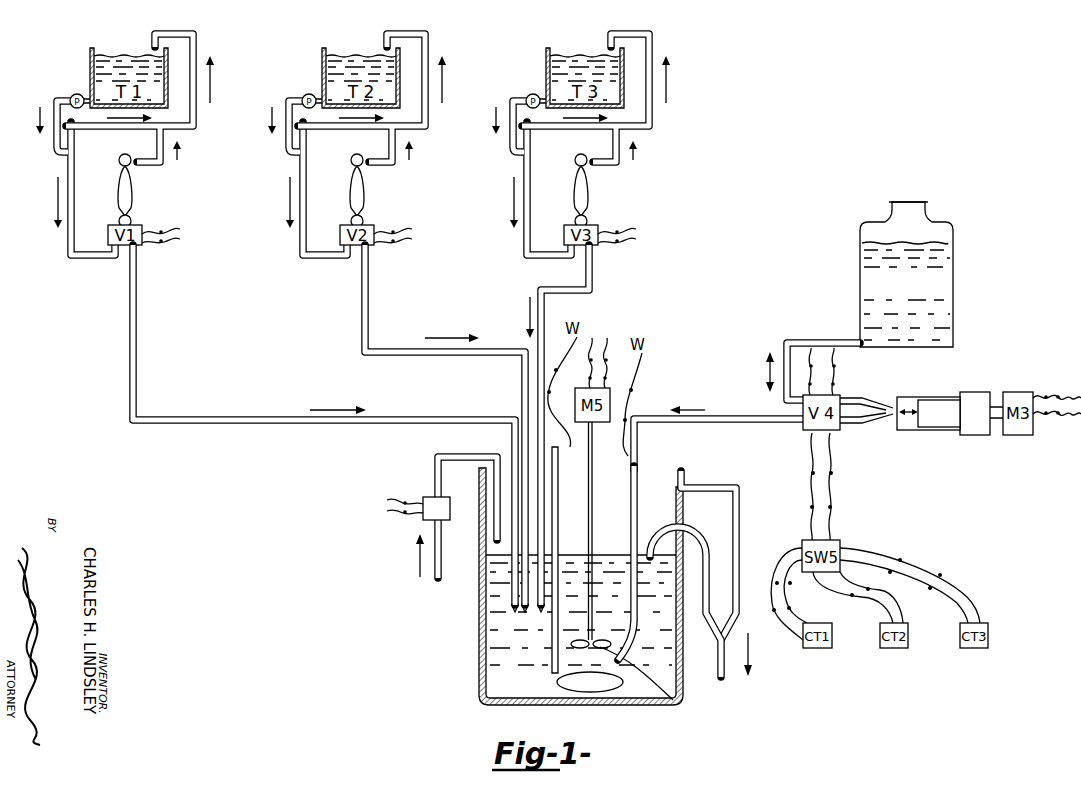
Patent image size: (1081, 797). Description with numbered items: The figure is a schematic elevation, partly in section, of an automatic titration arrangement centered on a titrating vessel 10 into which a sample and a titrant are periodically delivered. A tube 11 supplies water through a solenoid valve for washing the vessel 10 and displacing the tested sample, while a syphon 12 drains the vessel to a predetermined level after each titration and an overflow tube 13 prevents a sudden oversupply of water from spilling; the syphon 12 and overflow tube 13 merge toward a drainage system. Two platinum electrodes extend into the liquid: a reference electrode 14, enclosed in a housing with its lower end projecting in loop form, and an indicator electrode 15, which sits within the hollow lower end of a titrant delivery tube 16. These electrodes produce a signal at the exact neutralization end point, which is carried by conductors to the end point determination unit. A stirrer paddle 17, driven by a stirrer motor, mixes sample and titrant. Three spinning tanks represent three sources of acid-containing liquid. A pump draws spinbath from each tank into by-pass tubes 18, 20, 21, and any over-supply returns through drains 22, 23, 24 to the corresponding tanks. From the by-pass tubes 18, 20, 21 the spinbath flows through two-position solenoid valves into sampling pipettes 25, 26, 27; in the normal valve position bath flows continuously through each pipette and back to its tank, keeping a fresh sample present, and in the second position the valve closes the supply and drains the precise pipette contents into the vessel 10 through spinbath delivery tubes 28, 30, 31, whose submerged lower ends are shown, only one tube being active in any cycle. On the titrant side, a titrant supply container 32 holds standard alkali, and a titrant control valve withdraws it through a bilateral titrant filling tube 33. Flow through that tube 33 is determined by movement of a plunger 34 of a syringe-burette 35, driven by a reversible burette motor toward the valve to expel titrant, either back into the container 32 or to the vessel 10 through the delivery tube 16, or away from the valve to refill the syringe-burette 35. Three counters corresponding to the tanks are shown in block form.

The titrating vessel 10 is at (480, 605).
The tube 11 is at (433, 582).
The syphon 12 is at (690, 536).
The overflow tube 13 is at (740, 516).
The reference electrode 14 is at (553, 640).
The indicator electrode 15 is at (641, 470).
The titrant delivery tube 16 is at (752, 416).
The stirrer paddle 17 is at (673, 700).
The by-pass tube 18 is at (60, 153).
The by-pass tube 20 is at (299, 178).
The by-pass tube 21 is at (521, 178).
The drain 22 is at (198, 48).
The drain 23 is at (381, 95).
The drain 24 is at (605, 95).
The sampling pipette 25 is at (137, 189).
The sampling pipette 26 is at (378, 190).
The sampling pipette 27 is at (602, 190).
The spinbath delivery tube 28 is at (171, 422).
The spinbath delivery tube 30 is at (373, 353).
The spinbath delivery tube 31 is at (593, 270).
The titrant supply container 32 is at (953, 302).
The titrant filling tube 33 is at (833, 343).
The plunger 34 is at (950, 406).
The syringe-burette 35 is at (907, 396).